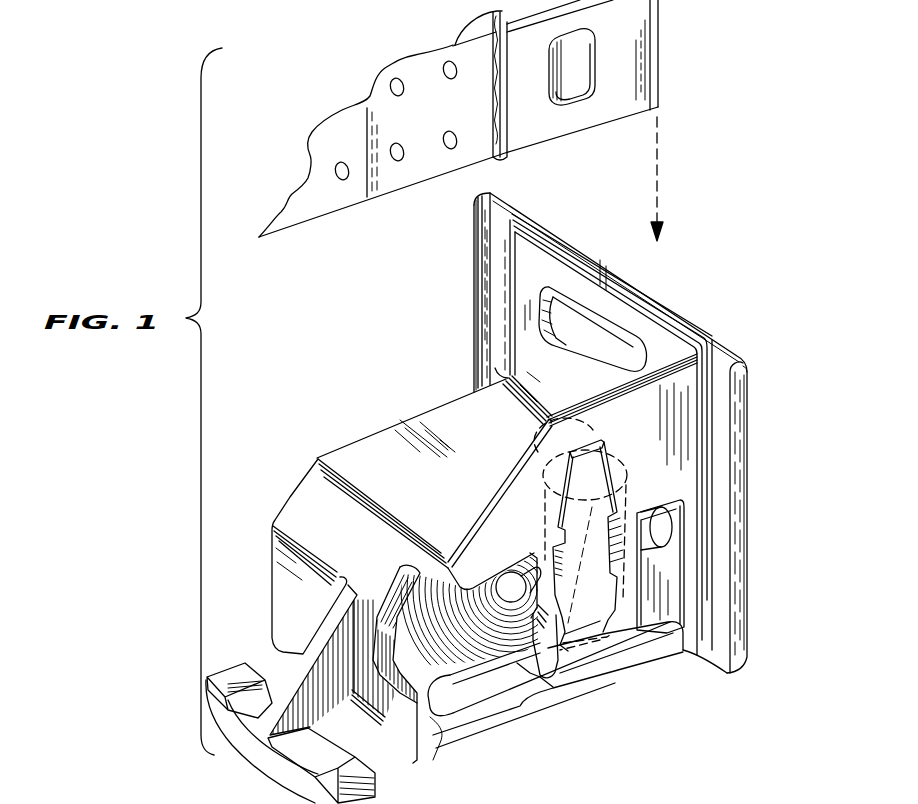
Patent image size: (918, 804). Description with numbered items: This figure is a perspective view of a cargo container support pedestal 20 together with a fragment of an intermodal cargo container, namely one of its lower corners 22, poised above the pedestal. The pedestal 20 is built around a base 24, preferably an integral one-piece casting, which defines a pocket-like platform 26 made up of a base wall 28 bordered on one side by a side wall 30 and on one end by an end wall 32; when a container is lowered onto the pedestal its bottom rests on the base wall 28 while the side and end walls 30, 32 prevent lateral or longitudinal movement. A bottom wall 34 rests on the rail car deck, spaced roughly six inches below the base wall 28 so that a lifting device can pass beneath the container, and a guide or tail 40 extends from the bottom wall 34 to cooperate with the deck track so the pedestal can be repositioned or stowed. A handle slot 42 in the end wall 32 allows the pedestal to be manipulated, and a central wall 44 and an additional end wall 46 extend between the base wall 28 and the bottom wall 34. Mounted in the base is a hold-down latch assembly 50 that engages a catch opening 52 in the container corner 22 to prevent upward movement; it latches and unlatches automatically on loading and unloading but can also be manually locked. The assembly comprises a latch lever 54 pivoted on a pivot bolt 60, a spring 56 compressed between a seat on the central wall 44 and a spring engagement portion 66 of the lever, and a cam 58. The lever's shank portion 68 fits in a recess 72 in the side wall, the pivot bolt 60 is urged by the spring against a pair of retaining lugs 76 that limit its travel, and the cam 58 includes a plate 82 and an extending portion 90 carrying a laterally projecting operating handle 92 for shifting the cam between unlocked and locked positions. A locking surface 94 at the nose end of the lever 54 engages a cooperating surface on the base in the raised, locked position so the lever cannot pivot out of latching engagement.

The cargo container support pedestal 20 is at (712, 327).
The lower corner of cargo container 22 is at (659, 19).
The base 24 is at (317, 457).
The pocket-like platform 26 is at (453, 415).
The base wall 28 is at (387, 440).
The side wall 30 is at (473, 523).
The end wall 32 is at (493, 228).
The bottom wall 34 is at (463, 737).
The guide or tail 40 is at (263, 752).
The handle slot 42 is at (616, 338).
The central wall 44 is at (407, 593).
The additional end wall 46 is at (287, 578).
The hold-down latch assembly 50 is at (690, 451).
The catch opening 52 is at (573, 104).
The latch lever 54 is at (602, 447).
The spring 56 is at (480, 610).
The cam 58 is at (553, 672).
The pivot bolt 60 is at (508, 573).
The spring engagement portion 66 is at (617, 630).
The shank portion 68 is at (617, 507).
The recess 72 is at (553, 488).
The retaining lugs 76 is at (503, 640).
The cam plate 82 is at (540, 676).
The extending portion 90 is at (560, 647).
The operating handle 92 is at (450, 750).
The locking surface 94 is at (583, 438).